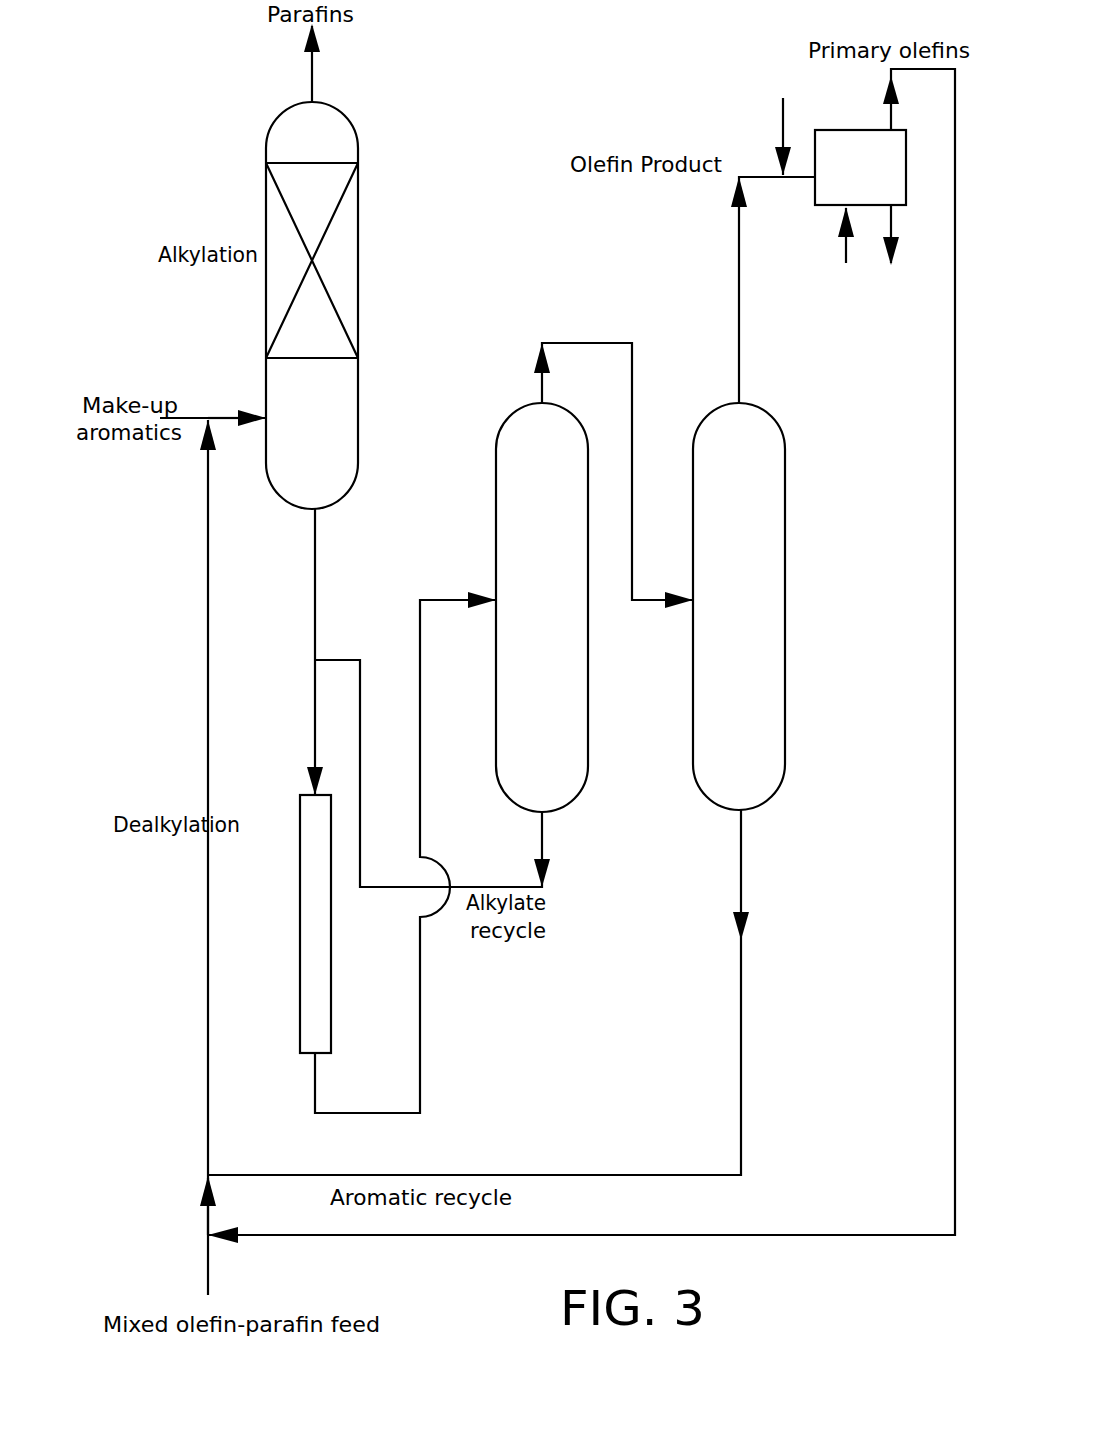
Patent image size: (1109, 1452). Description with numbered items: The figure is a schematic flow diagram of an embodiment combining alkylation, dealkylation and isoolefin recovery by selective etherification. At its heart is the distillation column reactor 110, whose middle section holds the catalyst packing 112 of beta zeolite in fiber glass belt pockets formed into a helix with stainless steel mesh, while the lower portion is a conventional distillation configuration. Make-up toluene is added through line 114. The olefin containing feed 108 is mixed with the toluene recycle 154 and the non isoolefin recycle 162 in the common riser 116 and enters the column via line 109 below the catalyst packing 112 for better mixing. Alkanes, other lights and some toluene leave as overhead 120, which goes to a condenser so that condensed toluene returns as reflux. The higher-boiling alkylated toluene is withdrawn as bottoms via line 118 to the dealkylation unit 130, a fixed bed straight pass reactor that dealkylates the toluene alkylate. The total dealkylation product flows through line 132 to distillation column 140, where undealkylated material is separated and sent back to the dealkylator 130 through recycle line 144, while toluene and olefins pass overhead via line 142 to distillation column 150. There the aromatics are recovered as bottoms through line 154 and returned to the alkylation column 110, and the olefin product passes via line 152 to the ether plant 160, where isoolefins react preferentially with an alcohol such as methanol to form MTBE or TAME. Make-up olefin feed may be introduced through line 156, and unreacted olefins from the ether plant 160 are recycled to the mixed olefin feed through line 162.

The olefin containing feed 108 is at (208, 1222).
The column feed line 109 is at (222, 425).
The distillation column reactor 110 is at (353, 125).
The catalyst packing 112 is at (358, 220).
The make-up toluene line 114 is at (190, 413).
The feed line 116 is at (207, 688).
The bottoms line 118 is at (318, 578).
The overhead 120 is at (313, 75).
The dealkylation unit 130 is at (331, 953).
The dealkylation product line 132 is at (420, 1058).
The distillation column 140 is at (496, 523).
The overhead line 142 is at (596, 343).
The recycle line 144 is at (498, 885).
The distillation column 150 is at (788, 528).
The olefin product line 152 is at (740, 340).
The toluene recycle line 154 is at (742, 1028).
The make-up olefin feed line 156 is at (783, 128).
The ether plant 160 is at (862, 130).
The non isoolefin recycle line 162 is at (955, 725).